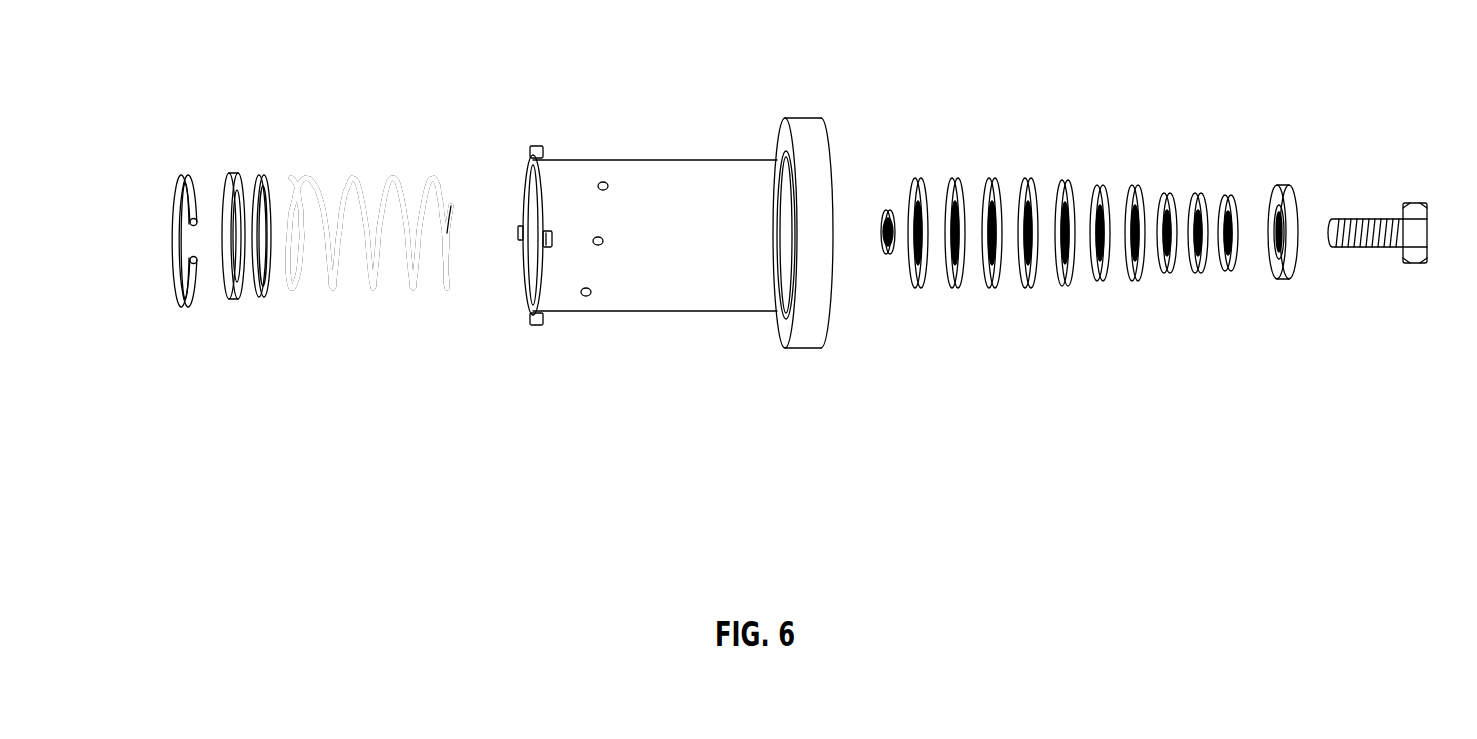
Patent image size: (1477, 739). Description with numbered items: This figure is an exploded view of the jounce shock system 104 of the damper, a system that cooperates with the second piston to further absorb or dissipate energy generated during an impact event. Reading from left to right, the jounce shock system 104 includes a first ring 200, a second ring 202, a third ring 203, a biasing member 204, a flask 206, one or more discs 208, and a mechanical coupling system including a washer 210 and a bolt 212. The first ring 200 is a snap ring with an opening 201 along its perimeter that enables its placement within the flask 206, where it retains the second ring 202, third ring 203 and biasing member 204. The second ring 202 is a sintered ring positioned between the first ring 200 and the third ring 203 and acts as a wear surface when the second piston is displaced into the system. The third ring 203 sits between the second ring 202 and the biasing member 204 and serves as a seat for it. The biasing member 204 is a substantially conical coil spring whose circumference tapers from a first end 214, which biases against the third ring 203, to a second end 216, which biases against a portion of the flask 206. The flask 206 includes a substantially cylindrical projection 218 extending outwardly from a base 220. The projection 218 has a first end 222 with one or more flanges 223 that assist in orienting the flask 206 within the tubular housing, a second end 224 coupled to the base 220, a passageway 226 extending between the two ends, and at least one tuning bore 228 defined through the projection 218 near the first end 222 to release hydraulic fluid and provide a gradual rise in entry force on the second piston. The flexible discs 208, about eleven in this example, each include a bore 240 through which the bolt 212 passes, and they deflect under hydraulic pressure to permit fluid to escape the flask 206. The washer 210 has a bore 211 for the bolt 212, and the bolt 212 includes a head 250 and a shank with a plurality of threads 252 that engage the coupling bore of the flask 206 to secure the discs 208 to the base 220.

The jounce shock system 104 is at (920, 35).
The first ring 200 is at (185, 127).
The opening 201 is at (204, 268).
The second ring 202 is at (236, 170).
The third ring 203 is at (262, 300).
The biasing member 204 is at (355, 95).
The flask 206 is at (630, 70).
The discs 208 is at (1169, 193).
The washer 210 is at (1346, 90).
The bore 211 is at (1289, 190).
The bolt 212 is at (1414, 196).
The first end 214 is at (288, 300).
The second end 216 is at (450, 232).
The projection 218 is at (675, 390).
The base 220 is at (790, 403).
The first end 222 is at (478, 378).
The flanges 223 is at (537, 147).
The second end 224 is at (786, 328).
The passageway 226 is at (532, 284).
The tuning bore 228 is at (606, 182).
The bore 240 is at (884, 215).
The head 250 is at (1432, 205).
The threads 252 is at (1372, 250).